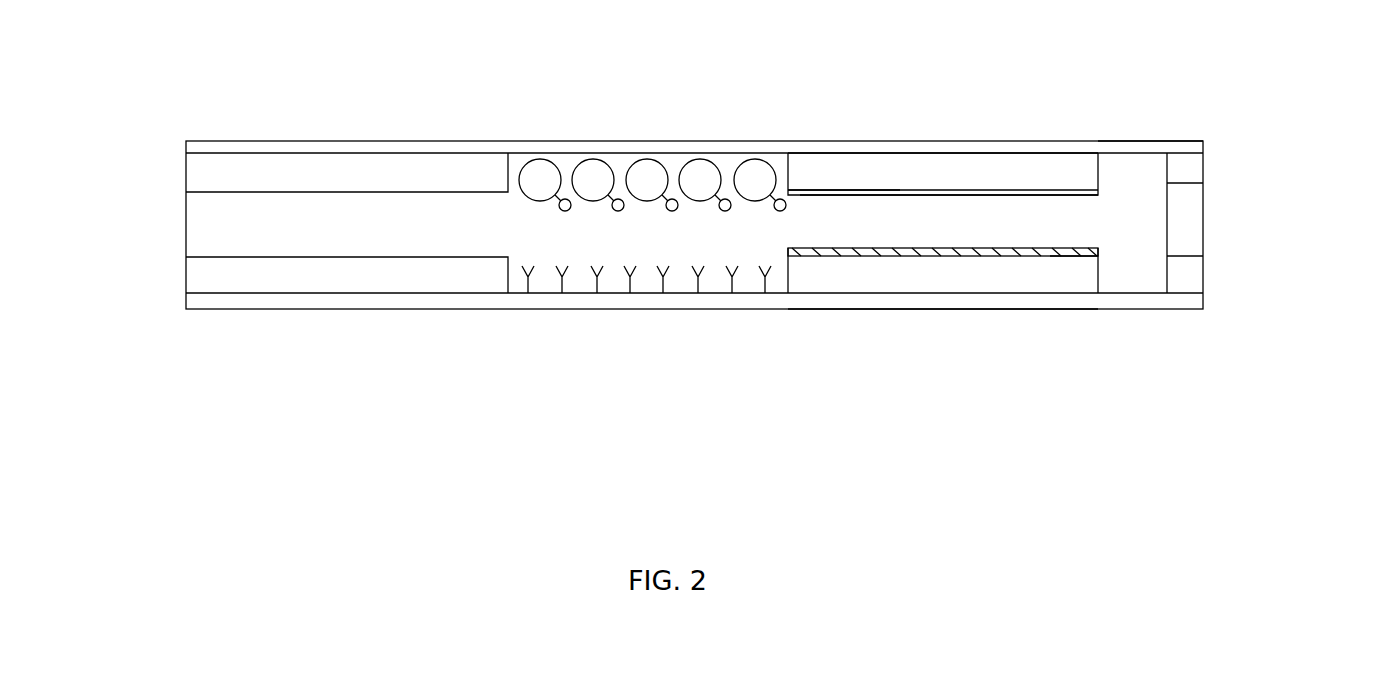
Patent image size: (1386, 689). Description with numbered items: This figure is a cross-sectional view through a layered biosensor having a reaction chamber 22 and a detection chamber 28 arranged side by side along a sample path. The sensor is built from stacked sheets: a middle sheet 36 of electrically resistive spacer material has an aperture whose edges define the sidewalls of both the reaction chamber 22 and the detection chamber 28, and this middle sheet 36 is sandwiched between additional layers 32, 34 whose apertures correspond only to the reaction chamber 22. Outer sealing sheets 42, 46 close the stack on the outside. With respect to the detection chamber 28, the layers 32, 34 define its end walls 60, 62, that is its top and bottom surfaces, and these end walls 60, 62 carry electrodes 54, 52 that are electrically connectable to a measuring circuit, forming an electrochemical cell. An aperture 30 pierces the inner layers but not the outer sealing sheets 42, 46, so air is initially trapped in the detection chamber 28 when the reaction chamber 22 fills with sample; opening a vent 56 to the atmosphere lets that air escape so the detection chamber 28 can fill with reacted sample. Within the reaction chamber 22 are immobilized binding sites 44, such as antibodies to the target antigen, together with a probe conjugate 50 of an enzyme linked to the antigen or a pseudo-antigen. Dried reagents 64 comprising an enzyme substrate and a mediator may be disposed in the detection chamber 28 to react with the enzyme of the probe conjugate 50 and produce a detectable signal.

The reaction chamber 22 is at (582, 242).
The detection chamber 28 is at (977, 230).
The aperture 30 is at (1128, 236).
The additional layer 32 is at (270, 172).
The additional layer 34 is at (245, 278).
The middle sheet 36 is at (243, 224).
The outer sealing sheet 42 is at (913, 300).
The immobilized binding site 44 is at (693, 286).
The outer sealing sheet 46 is at (933, 142).
The probe conjugate 50 is at (598, 160).
The electrode 52 is at (907, 251).
The electrode 54 is at (870, 200).
The vent 56 is at (1133, 145).
The end wall 60 is at (835, 193).
The end wall 62 is at (835, 256).
The dried reagents 64 is at (1072, 254).